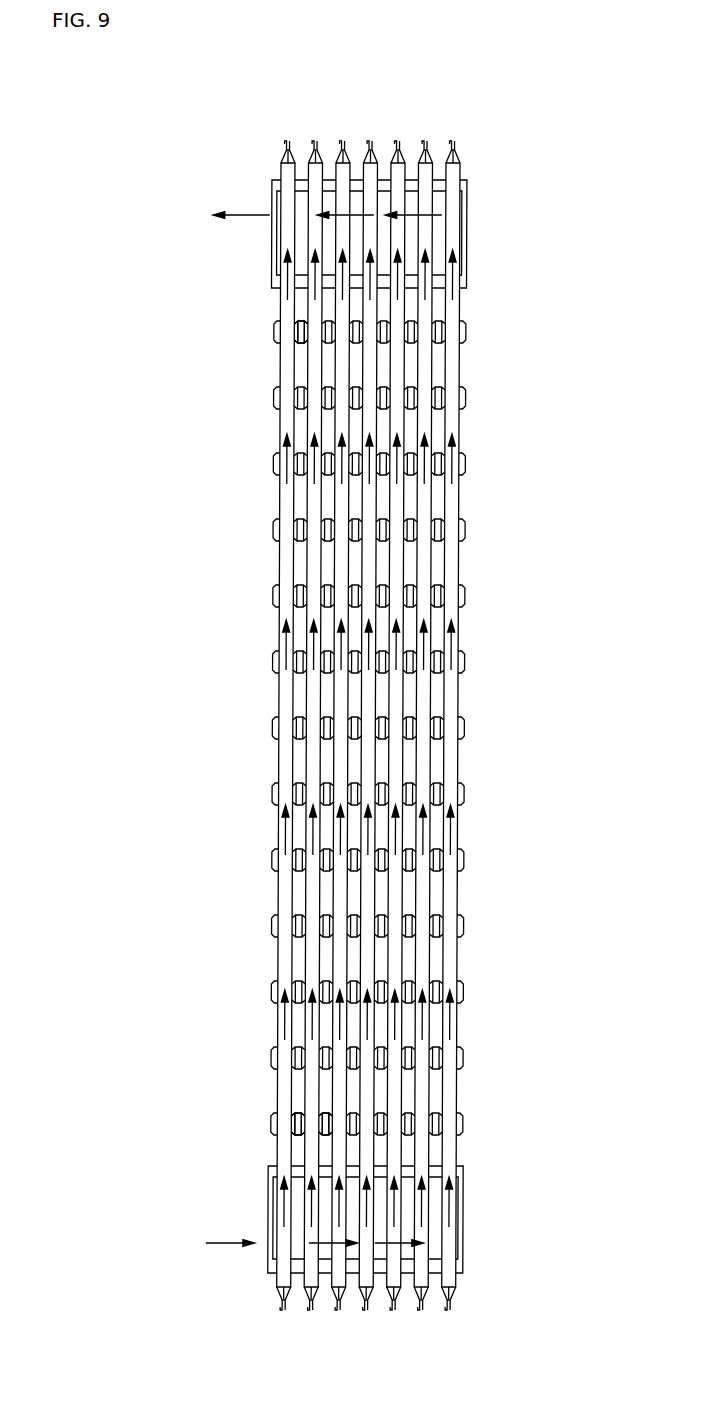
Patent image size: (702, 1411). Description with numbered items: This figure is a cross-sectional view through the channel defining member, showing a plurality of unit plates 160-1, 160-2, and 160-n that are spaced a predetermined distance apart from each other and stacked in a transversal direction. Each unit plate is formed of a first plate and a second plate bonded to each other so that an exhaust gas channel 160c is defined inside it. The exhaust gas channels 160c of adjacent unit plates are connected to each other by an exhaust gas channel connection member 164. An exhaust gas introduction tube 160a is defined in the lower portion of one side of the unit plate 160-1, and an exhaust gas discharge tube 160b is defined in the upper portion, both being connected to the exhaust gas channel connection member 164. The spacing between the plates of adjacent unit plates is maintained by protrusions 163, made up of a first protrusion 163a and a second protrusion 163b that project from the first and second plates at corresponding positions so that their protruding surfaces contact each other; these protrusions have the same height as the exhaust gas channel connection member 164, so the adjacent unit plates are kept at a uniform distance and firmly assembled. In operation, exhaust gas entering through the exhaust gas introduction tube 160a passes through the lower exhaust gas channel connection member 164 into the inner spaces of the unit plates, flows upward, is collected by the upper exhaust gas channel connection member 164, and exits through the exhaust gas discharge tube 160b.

The unit plate 160-1 is at (287, 158).
The unit plate 160-2 is at (292, 157).
The unit plate 160-n is at (475, 128).
The exhaust gas introduction tube 160a is at (272, 1205).
The exhaust gas discharge tube 160b is at (273, 202).
The exhaust gas channel 160c is at (313, 1133).
The protrusions 163 is at (117, 383).
The first protrusion 163a is at (300, 330).
The second protrusion 163b is at (306, 341).
The exhaust gas channel connection member 164 is at (302, 233).